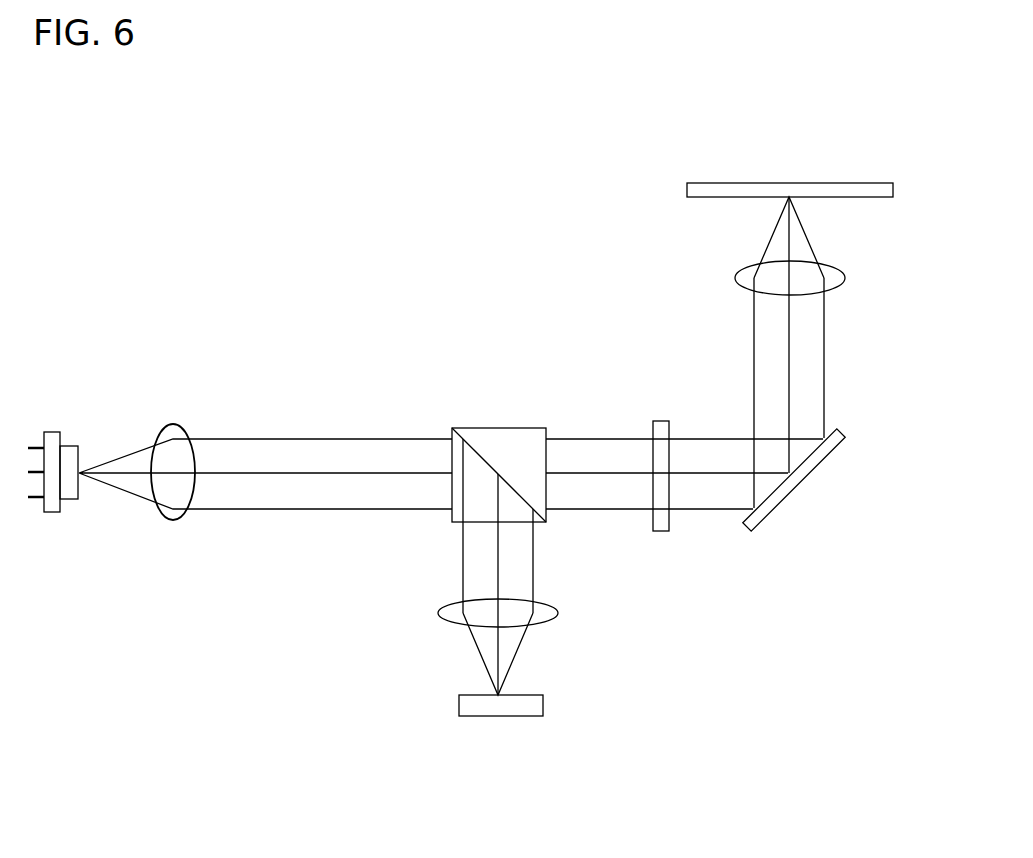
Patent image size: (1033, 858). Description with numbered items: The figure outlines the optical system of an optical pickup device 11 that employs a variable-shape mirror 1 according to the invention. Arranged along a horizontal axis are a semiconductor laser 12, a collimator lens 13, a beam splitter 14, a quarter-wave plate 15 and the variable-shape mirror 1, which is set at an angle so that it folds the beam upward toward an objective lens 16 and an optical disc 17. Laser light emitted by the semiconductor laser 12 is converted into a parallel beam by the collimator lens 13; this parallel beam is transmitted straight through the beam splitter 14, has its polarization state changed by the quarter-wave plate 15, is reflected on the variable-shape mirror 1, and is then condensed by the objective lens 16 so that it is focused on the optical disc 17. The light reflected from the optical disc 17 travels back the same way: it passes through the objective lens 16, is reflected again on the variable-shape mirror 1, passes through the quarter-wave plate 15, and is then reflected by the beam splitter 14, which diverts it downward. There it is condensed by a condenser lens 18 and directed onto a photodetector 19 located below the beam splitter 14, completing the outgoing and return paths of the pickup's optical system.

The variable-shape mirror 1 is at (787, 498).
The optical pickup device 11 is at (380, 263).
The semiconductor laser 12 is at (52, 512).
The collimator lens 13 is at (173, 520).
The beam splitter 14 is at (491, 428).
The quarter-wave plate 15 is at (660, 421).
The objective lens 16 is at (735, 278).
The optical disc 17 is at (702, 183).
The condenser lens 18 is at (560, 613).
The photodetector 19 is at (543, 705).